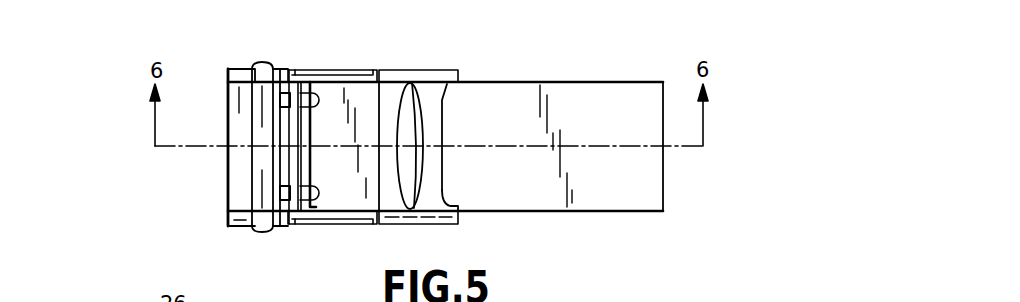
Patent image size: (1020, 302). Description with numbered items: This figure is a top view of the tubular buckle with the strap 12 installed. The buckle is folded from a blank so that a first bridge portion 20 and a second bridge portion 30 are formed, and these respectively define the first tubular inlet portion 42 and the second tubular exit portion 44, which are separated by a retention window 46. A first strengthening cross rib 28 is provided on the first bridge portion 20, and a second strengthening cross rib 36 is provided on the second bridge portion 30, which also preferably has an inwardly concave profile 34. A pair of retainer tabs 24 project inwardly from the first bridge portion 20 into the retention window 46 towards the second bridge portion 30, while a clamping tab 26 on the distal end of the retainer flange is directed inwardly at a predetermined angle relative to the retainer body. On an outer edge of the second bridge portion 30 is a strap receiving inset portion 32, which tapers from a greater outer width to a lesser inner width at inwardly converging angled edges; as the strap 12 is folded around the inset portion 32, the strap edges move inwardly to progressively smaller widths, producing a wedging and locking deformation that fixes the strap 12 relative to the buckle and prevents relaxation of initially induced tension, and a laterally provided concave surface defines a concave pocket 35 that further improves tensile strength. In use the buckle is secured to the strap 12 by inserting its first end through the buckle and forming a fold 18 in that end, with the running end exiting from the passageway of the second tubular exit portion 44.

The strap 12 is at (571, 110).
The fold 18 is at (227, 163).
The first bridge portion 20 is at (226, 87).
The retainer tabs 24 is at (323, 97).
The clamping tab 26 is at (309, 133).
The first strengthening cross rib 28 is at (263, 95).
The second bridge portion 30 is at (440, 116).
The strap receiving inset portion 32 is at (447, 180).
The inwardly concave profile 34 is at (430, 156).
The concave pocket 35 is at (443, 133).
The second strengthening cross rib 36 is at (408, 103).
The first tubular inlet portion 42 is at (227, 218).
The second tubular exit portion 44 is at (458, 218).
The retention window 46 is at (345, 185).